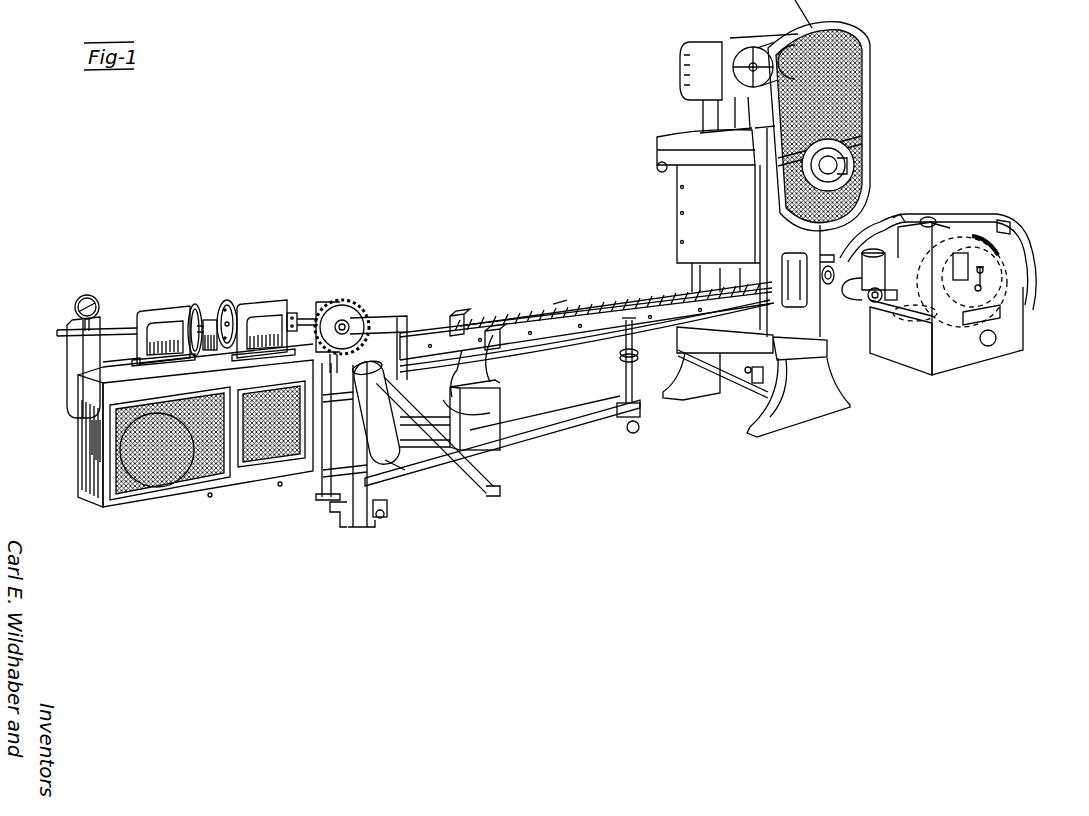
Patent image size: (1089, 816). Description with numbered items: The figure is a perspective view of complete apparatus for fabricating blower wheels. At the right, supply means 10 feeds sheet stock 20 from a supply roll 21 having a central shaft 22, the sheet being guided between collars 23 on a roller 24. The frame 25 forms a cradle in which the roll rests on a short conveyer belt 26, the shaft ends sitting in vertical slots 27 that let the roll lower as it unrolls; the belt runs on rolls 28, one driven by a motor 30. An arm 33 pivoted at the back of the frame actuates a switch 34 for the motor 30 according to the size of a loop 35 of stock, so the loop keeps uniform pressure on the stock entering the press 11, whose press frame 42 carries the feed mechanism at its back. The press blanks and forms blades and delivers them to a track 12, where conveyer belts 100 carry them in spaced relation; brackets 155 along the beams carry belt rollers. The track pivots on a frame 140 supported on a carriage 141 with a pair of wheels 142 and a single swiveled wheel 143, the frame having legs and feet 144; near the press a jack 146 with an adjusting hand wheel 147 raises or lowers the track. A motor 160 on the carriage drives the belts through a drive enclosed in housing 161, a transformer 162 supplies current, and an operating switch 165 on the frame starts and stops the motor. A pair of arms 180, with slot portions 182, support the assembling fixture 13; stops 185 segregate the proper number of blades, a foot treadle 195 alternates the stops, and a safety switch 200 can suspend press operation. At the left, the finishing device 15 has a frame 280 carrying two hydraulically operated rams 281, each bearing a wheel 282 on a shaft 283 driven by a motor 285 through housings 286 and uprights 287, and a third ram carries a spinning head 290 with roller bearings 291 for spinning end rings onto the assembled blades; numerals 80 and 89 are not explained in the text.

The supply means 10 is at (975, 178).
The press 11 is at (648, 128).
The track 12 is at (554, 292).
The fixture or jig 13 is at (378, 290).
The finishing device 15 is at (185, 263).
The sheet stock 20 is at (860, 218).
The supply roll 21 is at (983, 232).
The central spindle or shaft 22 is at (968, 275).
The collars 23 is at (898, 218).
The roller 24 is at (935, 220).
The frame 25 is at (1015, 290).
The conveyer belt 26 is at (978, 292).
The vertical slots 27 is at (968, 297).
The rolls 28 is at (1015, 320).
The motor 30 is at (860, 300).
The arm 33 is at (1022, 265).
The switch 34 is at (993, 347).
The loop 35 is at (1020, 226).
The press frame 42 is at (828, 290).
The fingers 80 is at (652, 300).
The gear 89 is at (362, 318).
The conveyer belts 100 is at (585, 343).
The frame 140 is at (355, 467).
The carriage 141 is at (553, 437).
The wheels 142 is at (385, 518).
The swiveled wheel 143 is at (641, 430).
The legs and feet 144 is at (493, 497).
The jack 146 is at (624, 385).
The adjusting hand wheel 147 is at (608, 355).
The brackets 155 is at (618, 350).
The motor 160 is at (433, 458).
The housing 161 is at (386, 405).
The transformer 162 is at (502, 418).
The operating switch 165 is at (325, 385).
The arms 180 is at (482, 292).
The elongated slot portion 182 is at (188, 312).
The stops 185 is at (500, 328).
The foot treadle 195 is at (338, 528).
The safety switch 200 is at (560, 298).
The frame 280 is at (85, 470).
The hydraulically operated rams 281 is at (155, 312).
The wheel 282 is at (235, 305).
The shaft 283 is at (95, 300).
The motor 285 is at (180, 497).
The housings 286 is at (76, 383).
The uprights 287 is at (100, 354).
The spinning head 290 is at (208, 318).
The roller bearing 291 is at (223, 300).